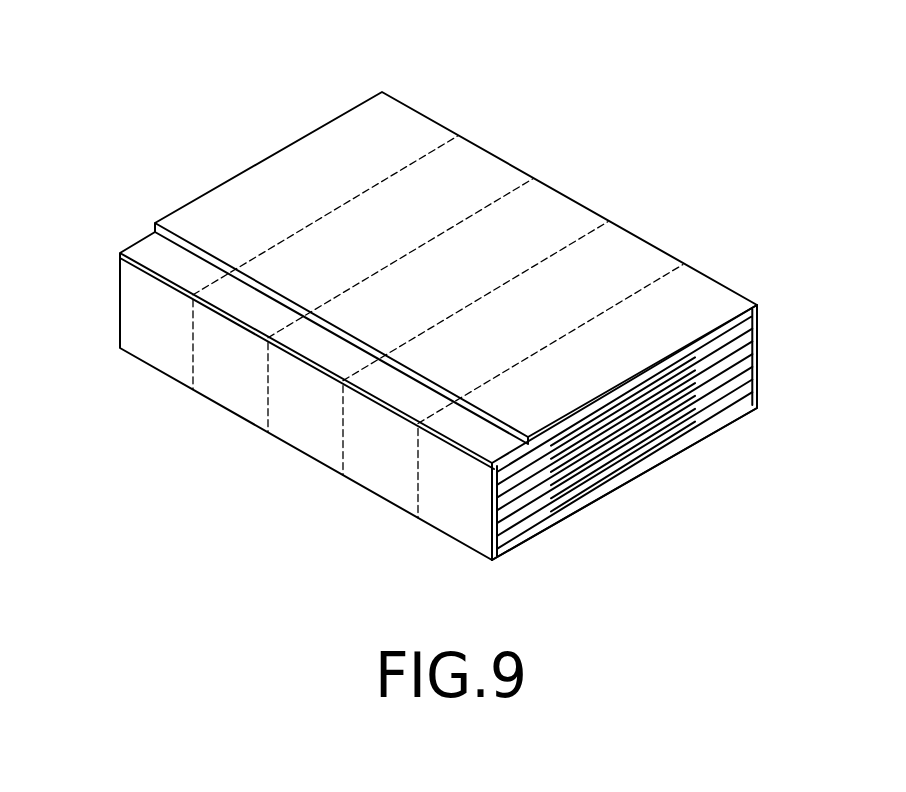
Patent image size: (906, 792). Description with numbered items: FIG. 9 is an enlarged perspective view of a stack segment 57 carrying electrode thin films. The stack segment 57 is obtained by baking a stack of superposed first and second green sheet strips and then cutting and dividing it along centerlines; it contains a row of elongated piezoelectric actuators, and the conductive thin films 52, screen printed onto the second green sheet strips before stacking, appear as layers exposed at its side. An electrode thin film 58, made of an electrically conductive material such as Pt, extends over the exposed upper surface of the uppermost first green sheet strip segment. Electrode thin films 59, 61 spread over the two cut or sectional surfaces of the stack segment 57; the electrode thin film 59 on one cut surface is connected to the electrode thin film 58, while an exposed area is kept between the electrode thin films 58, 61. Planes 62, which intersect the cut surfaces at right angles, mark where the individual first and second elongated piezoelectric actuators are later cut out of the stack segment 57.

The thin films 52 is at (670, 442).
The stack segment 57 is at (637, 478).
The electrode thin film 58 is at (262, 182).
The electrode thin film 59 is at (758, 343).
The electrode thin film 61 is at (120, 325).
The planes 62 is at (415, 158).